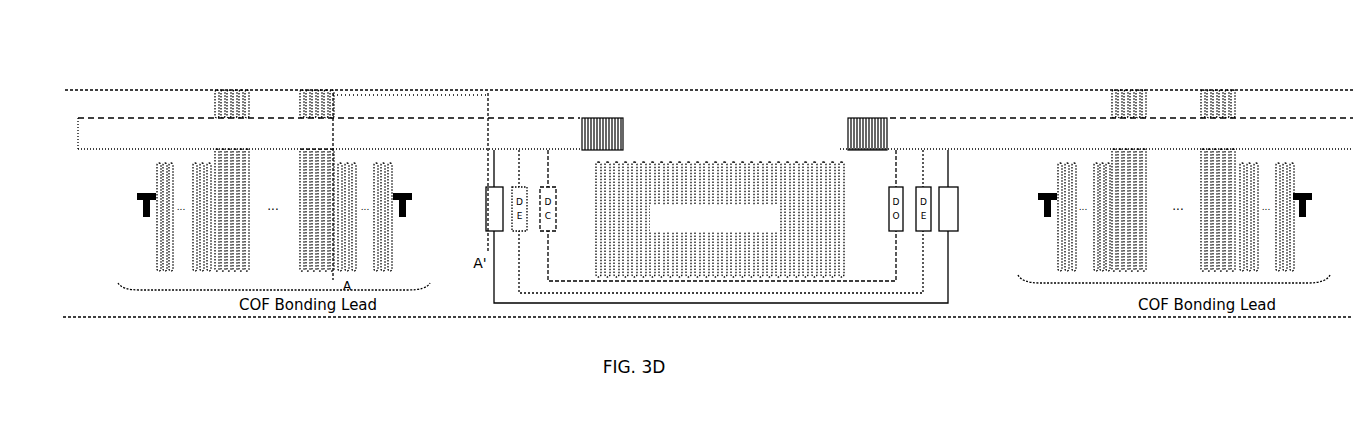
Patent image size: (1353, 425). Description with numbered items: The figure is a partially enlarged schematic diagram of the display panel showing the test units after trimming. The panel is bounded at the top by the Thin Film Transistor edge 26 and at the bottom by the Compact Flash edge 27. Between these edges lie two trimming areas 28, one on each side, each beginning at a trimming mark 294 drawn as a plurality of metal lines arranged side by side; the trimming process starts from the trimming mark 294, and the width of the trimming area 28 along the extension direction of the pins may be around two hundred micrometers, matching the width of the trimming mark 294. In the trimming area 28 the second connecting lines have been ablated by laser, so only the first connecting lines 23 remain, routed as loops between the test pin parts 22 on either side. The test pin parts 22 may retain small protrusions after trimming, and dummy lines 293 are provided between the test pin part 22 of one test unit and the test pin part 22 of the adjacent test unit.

The Thin Film Transistor edge 26 is at (693, 74).
The Compact Flash edge 27 is at (696, 306).
The trimming area 28 is at (92, 132).
The test pin part 22 is at (490, 190).
The first connecting line 23 is at (800, 278).
The dummy line 293 is at (710, 185).
The trimming mark 294 is at (602, 135).